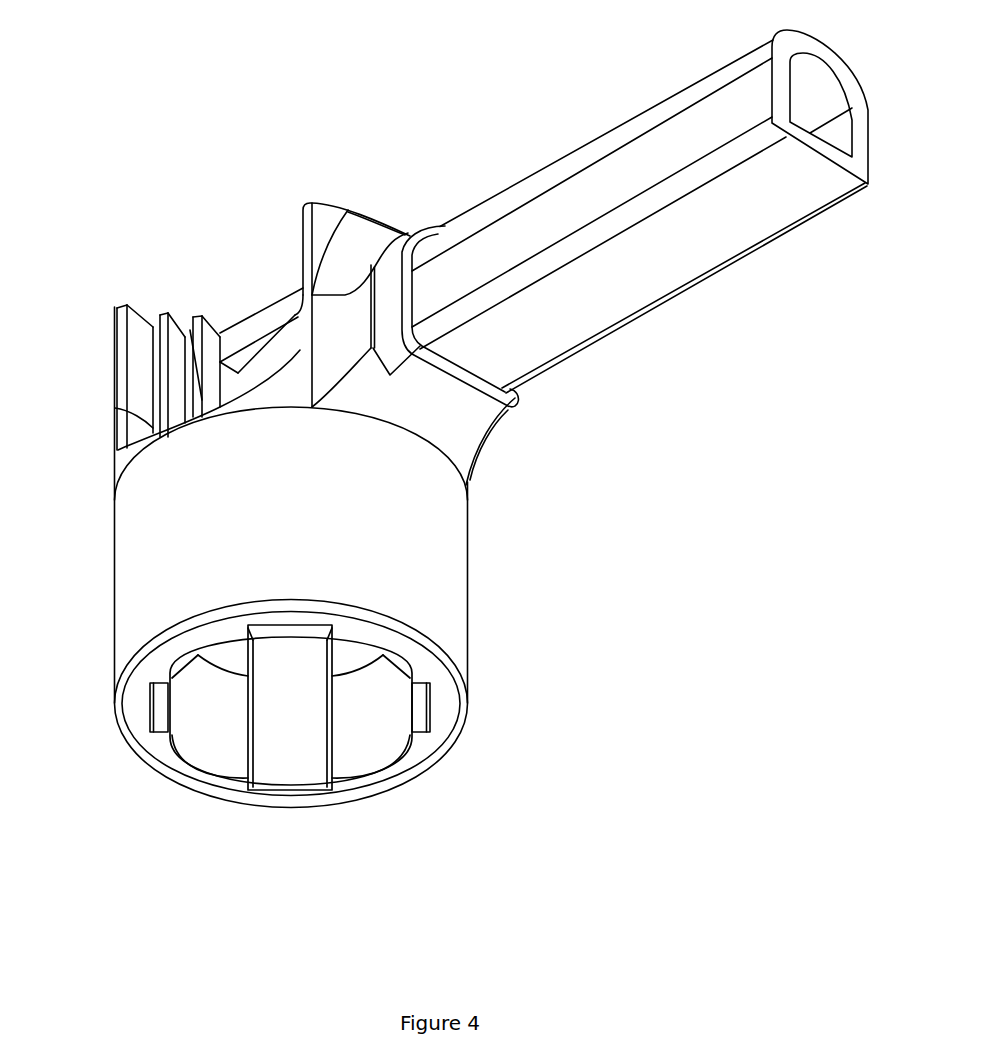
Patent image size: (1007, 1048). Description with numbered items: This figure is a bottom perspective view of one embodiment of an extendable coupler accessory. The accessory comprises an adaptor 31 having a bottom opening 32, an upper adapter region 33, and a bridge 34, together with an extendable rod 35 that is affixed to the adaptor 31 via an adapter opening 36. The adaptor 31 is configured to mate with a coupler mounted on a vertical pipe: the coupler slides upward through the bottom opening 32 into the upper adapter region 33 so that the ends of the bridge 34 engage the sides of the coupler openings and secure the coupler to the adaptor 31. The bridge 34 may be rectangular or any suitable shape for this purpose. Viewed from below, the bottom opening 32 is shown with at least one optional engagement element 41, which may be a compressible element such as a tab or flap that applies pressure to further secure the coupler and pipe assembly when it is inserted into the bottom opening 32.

The adaptor 31 is at (455, 556).
The bottom opening 32 is at (213, 731).
The upper adapter region 33 is at (117, 378).
The bridge 34 is at (273, 297).
The extendable rod 35 is at (598, 298).
The adapter opening 36 is at (430, 233).
The engagement element 41 is at (420, 723).